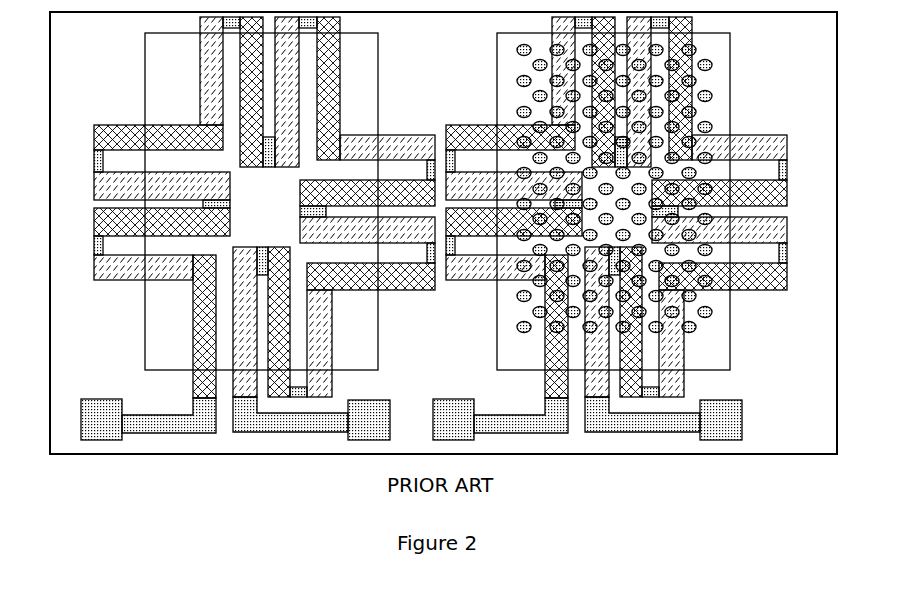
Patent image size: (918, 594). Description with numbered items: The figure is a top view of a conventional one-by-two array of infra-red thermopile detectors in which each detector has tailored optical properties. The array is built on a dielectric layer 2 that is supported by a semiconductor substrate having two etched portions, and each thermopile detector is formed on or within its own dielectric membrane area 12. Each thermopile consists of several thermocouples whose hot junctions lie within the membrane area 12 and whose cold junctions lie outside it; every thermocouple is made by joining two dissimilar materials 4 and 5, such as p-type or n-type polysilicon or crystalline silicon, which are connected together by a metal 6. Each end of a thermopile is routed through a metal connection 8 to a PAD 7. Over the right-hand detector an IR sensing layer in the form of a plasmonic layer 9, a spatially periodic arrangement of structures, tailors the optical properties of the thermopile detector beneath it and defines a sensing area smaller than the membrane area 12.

The dielectric layer 2 is at (818, 70).
The thermopile material 4 is at (110, 272).
The thermopile material 5 is at (418, 283).
The metal 6 is at (95, 247).
The PAD 7 is at (100, 415).
The metal connection 8 is at (184, 428).
The plasmonic layer 9 is at (528, 82).
The dielectric membrane area 12 is at (170, 88).